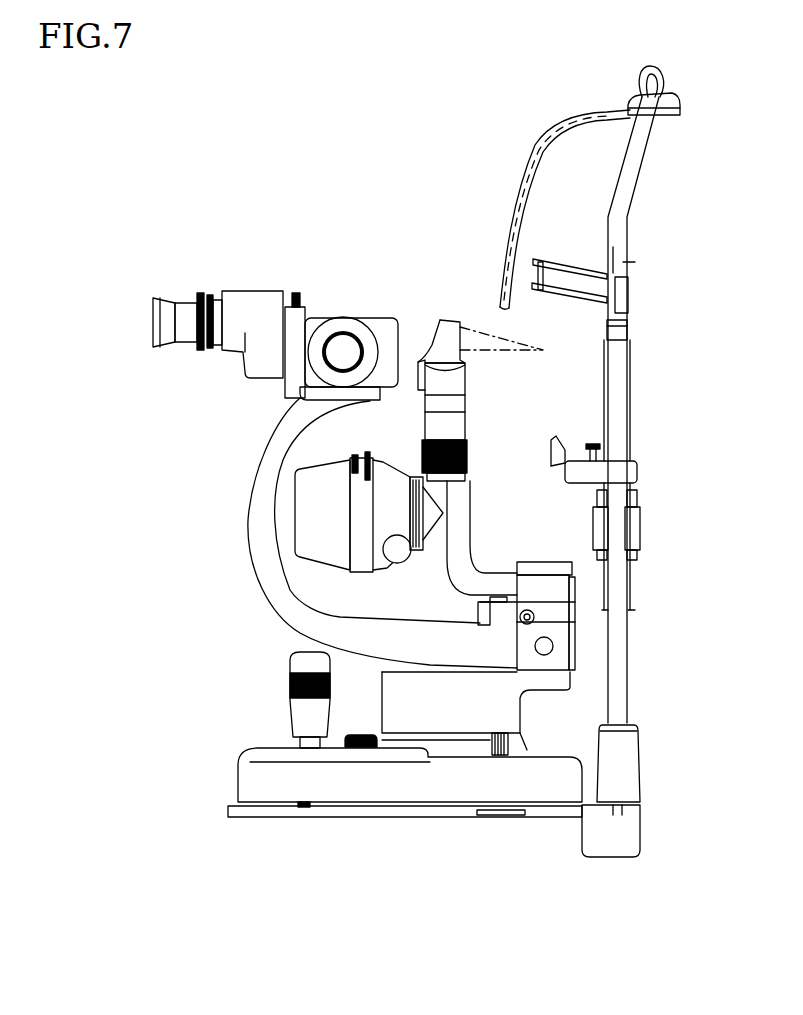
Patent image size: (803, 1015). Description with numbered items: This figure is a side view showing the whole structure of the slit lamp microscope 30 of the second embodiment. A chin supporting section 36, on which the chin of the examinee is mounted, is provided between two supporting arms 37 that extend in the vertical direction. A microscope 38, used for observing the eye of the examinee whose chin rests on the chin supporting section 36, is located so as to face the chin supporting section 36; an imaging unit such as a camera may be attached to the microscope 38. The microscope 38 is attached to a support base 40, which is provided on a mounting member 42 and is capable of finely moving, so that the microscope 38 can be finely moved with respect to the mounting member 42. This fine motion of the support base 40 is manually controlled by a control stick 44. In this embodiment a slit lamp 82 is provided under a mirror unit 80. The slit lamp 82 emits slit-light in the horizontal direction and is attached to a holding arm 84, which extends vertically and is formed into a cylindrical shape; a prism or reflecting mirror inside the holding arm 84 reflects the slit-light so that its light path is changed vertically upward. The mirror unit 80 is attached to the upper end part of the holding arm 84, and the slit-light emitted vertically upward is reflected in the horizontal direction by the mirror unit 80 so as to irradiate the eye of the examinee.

The slit lamp microscope 30 is at (395, 178).
The chin supporting section 36 is at (563, 447).
The supporting arms 37 is at (615, 663).
The microscope 38 is at (220, 300).
The support base 40 is at (408, 679).
The mounting member 42 is at (245, 770).
The control stick 44 is at (300, 703).
The mirror unit 80 is at (443, 330).
The slit lamp 82 is at (307, 503).
The holding arm 84 is at (462, 488).